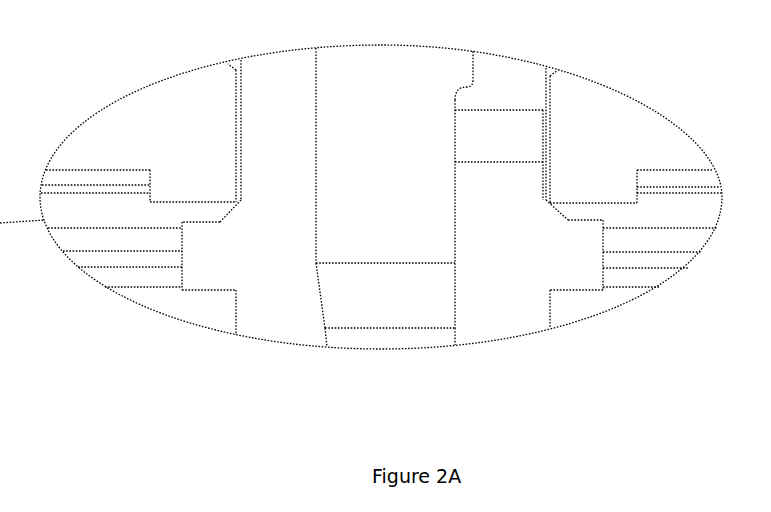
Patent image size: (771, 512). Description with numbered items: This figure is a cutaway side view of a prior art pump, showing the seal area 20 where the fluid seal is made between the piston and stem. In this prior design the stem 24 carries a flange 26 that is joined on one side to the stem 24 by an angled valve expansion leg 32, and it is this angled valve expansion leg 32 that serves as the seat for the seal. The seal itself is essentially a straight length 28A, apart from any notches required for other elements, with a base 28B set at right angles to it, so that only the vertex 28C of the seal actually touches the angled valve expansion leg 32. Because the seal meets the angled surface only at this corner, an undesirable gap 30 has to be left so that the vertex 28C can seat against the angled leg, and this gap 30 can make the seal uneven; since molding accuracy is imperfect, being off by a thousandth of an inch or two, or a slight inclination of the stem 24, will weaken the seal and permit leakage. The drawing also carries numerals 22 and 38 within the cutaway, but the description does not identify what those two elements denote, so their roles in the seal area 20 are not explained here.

The seal area 20 is at (587, 327).
The central body 22 is at (384, 80).
The stem 24 is at (488, 313).
The flange 26 is at (593, 262).
The straight length 28A is at (230, 108).
The base 28B is at (163, 197).
The vertex 28C is at (229, 194).
The gap 30 is at (553, 108).
The angled valve expansion leg 32 is at (567, 204).
The surface 38 is at (607, 123).